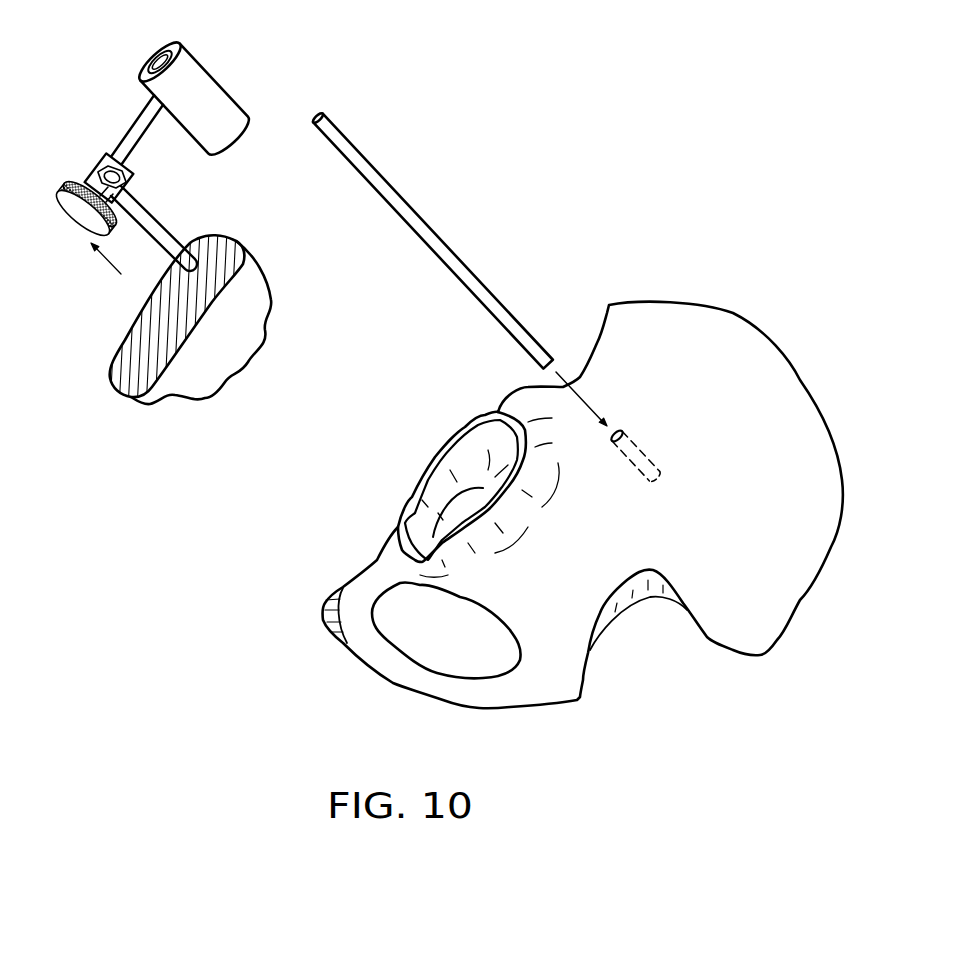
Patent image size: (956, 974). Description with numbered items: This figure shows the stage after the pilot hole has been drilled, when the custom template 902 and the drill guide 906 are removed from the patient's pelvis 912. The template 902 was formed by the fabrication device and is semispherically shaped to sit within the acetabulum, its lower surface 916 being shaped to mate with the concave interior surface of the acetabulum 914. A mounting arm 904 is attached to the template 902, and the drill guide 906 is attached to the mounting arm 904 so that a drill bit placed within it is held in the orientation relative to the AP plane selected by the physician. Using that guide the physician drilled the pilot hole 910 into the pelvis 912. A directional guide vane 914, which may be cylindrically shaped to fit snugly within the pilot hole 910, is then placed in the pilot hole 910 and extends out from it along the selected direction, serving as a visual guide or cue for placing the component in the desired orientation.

The custom template 902 is at (137, 408).
The mounting arm 904 is at (139, 125).
The drill guide 906 is at (214, 78).
The pilot hole 910 is at (619, 428).
The pelvis 912 is at (748, 358).
The directional guide vane 914 is at (428, 222).
The lower surface 916 is at (271, 306).